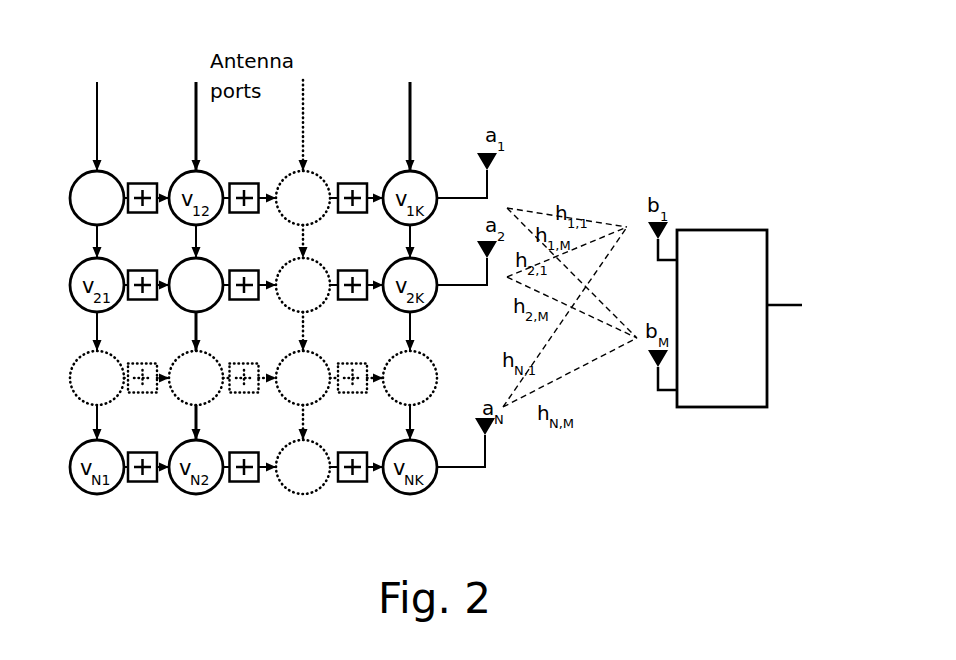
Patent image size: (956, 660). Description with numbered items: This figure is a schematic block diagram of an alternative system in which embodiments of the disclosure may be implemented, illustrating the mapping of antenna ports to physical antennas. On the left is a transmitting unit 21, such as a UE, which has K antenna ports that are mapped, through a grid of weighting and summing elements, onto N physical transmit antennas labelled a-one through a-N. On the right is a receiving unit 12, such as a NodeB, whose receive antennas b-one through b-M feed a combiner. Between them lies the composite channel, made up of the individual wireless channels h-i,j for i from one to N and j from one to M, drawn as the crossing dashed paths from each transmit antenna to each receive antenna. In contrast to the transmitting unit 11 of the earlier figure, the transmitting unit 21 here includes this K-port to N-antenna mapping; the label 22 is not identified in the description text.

The receiving unit 12 is at (728, 422).
The transmitting unit 21 is at (337, 492).
The transmitting unit 11 is at (97, 198).
The weighting element v22 22 is at (196, 285).